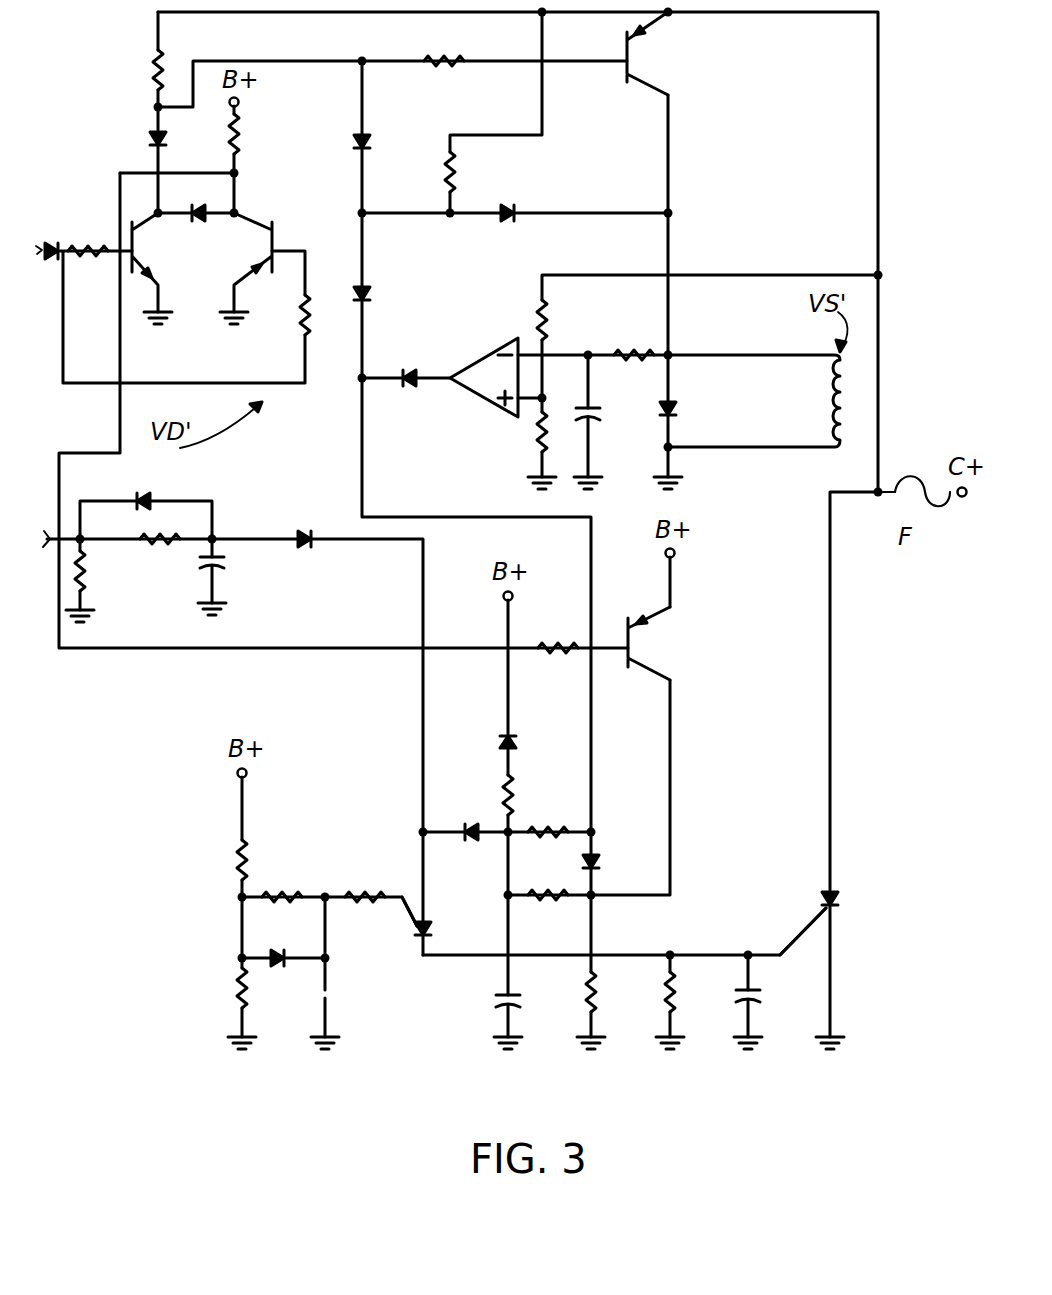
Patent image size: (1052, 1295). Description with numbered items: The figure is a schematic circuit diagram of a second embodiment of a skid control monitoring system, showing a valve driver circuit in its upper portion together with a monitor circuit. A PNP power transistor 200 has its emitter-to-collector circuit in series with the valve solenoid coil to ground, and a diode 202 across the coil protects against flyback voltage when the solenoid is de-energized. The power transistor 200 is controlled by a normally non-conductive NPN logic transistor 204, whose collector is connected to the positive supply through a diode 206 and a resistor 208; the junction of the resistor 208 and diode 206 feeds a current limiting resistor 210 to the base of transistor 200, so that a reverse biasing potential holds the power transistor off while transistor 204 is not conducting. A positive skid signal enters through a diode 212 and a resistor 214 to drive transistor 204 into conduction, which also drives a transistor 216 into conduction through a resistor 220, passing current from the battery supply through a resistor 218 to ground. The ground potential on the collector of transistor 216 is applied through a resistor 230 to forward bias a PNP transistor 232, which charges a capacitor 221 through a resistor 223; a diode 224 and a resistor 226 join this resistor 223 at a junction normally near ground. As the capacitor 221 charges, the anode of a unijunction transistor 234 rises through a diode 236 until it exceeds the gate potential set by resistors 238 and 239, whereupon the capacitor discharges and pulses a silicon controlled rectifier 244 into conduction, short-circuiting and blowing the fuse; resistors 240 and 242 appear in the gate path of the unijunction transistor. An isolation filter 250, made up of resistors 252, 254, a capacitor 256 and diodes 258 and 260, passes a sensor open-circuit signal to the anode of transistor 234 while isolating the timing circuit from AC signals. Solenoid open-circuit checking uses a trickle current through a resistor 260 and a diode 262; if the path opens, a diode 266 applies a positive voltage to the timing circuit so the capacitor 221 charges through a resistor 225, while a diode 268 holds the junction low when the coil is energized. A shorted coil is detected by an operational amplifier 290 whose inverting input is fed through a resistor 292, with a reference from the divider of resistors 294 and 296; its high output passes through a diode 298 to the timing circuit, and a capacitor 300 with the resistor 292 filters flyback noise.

The power transistor 200 is at (645, 57).
The diode 202 is at (675, 406).
The logic transistor 204 is at (148, 256).
The diode 206 is at (150, 144).
The resistor 208 is at (158, 70).
The current limiting resistor 210 is at (443, 42).
The diode 212 is at (60, 245).
The resistor 214 is at (92, 258).
The transistor 216 is at (256, 262).
The resistor 218 is at (240, 138).
The resistor 220 is at (310, 315).
The capacitor 221 is at (494, 1000).
The resistor 223 is at (550, 897).
The diode 224 is at (630, 848).
The resistor 225 is at (550, 828).
The resistor 226 is at (596, 995).
The resistor 230 is at (556, 645).
The transistor 232 is at (644, 640).
The unijunction transistor 234 is at (418, 936).
The diode 236 is at (470, 826).
The resistor 238 is at (240, 852).
The resistor 239 is at (240, 983).
The resistor 240 is at (282, 894).
The resistor 242 is at (366, 894).
The silicon controlled rectifier 244 is at (840, 904).
The isolation filter 250 is at (232, 510).
The resistor 252 is at (88, 582).
The resistor 254 is at (160, 543).
The capacitor 256 is at (220, 562).
The diode 258 is at (143, 496).
The resistor 260 is at (448, 176).
The diode 262 is at (512, 205).
The diode 266 is at (372, 297).
The diode 268 is at (370, 140).
The operational amplifier 290 is at (485, 355).
The resistor 292 is at (633, 352).
The resistor 294 is at (538, 430).
The resistor 296 is at (538, 302).
The diode 298 is at (408, 387).
The capacitor 300 is at (628, 402).